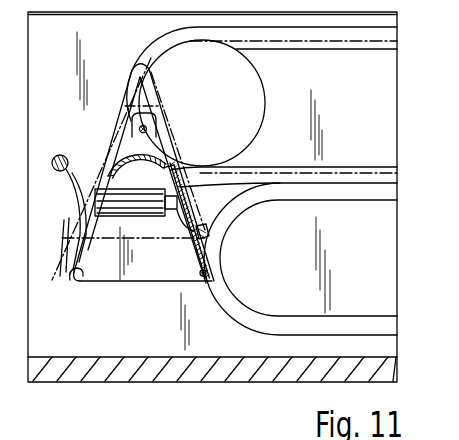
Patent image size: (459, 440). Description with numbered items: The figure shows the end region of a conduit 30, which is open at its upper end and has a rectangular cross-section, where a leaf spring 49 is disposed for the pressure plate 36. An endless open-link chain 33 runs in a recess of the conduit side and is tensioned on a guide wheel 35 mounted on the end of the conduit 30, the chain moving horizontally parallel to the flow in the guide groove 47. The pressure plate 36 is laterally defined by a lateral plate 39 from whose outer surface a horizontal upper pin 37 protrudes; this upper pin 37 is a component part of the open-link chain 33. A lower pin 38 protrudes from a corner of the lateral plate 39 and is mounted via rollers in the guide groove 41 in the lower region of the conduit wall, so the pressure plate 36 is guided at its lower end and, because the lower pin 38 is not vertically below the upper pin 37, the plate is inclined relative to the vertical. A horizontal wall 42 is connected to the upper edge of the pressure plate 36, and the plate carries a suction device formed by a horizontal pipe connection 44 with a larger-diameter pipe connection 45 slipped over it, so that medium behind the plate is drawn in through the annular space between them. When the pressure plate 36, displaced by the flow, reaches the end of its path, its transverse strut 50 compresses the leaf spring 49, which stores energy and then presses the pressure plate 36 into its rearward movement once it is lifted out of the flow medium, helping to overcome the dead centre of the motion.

The conduit 30 is at (200, 338).
The endless open-link chain 33 is at (365, 44).
The guide wheel 35 is at (254, 99).
The pressure plate 36 is at (208, 256).
The upper pin 37 is at (148, 128).
The lower pin 38 is at (206, 274).
The lateral plate 39 is at (115, 264).
The guide groove 41 is at (252, 324).
The horizontal wall 42 is at (123, 155).
The pipe connection 44 is at (209, 229).
The pipe connection 45 is at (143, 203).
The guide groove 47 is at (318, 44).
The leaf spring 49 is at (57, 262).
The transverse strut 50 is at (83, 283).